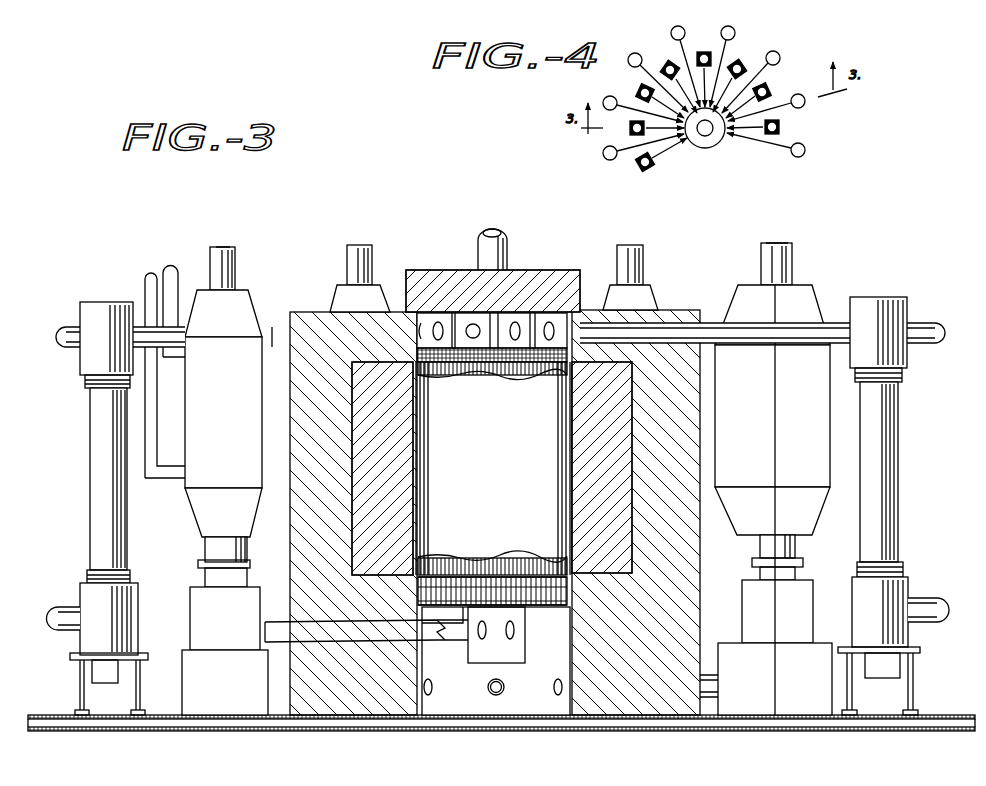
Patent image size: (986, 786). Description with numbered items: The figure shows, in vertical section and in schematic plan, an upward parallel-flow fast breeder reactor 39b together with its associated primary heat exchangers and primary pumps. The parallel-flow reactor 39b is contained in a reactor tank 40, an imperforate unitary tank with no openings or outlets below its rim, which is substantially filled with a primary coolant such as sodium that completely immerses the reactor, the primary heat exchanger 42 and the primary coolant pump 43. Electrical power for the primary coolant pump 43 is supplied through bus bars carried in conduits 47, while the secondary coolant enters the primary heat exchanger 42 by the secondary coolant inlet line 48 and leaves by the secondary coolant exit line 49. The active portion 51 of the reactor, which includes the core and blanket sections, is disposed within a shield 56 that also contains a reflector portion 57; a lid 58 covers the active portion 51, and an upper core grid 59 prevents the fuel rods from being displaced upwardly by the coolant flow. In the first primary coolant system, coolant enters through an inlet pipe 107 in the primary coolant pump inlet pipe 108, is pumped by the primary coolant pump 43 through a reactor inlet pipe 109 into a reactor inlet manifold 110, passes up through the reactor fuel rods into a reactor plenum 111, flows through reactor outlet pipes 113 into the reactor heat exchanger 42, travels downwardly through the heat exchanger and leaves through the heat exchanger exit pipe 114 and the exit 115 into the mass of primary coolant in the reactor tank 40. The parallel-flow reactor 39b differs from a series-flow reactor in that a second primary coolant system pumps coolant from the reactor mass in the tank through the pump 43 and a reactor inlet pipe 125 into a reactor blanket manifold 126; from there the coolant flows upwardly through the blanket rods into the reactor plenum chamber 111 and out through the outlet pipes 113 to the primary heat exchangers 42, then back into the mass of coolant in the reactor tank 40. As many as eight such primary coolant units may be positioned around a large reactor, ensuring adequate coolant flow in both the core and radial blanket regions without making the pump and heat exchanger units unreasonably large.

In FIG. 3, the parallel-flow reactor 39b is at (525, 236).
In FIG. 4, the parallel-flow reactor 39b is at (706, 148).
In FIG. 3, the reactor tank 40 is at (312, 737).
In FIG. 3, the primary heat exchanger 42 is at (98, 457).
In FIG. 4, the primary heat exchanger 42 is at (736, 31).
In FIG. 3, the primary coolant pump 43 is at (343, 297).
In FIG. 4, the primary coolant pump 43 is at (638, 163).
In FIG. 3, the conduits 47 is at (168, 474).
In FIG. 3, the secondary coolant inlet line 48 is at (63, 608).
In FIG. 3, the secondary coolant exit line 49 is at (60, 322).
In FIG. 3, the active portion 51 is at (552, 442).
In FIG. 3, the shield 56 is at (301, 530).
In FIG. 3, the reflector portion 57 is at (368, 502).
In FIG. 3, the lid 58 is at (543, 278).
In FIG. 3, the upper core grid 59 is at (413, 358).
In FIG. 3, the inlet pipe 107 is at (231, 262).
In FIG. 3, the primary coolant pump inlet pipe 108 is at (233, 272).
In FIG. 3, the reactor inlet pipe 109 is at (480, 629).
In FIG. 3, the reactor inlet manifold 110 is at (510, 615).
In FIG. 3, the reactor plenum 111 is at (445, 318).
In FIG. 3, the reactor outlet pipes 113 is at (472, 322).
In FIG. 3, the heat exchanger exit pipe 114 is at (103, 672).
In FIG. 3, the exit 115 is at (110, 690).
In FIG. 3, the reactor inlet pipe 125 is at (490, 687).
In FIG. 3, the reactor blanket manifold 126 is at (520, 703).